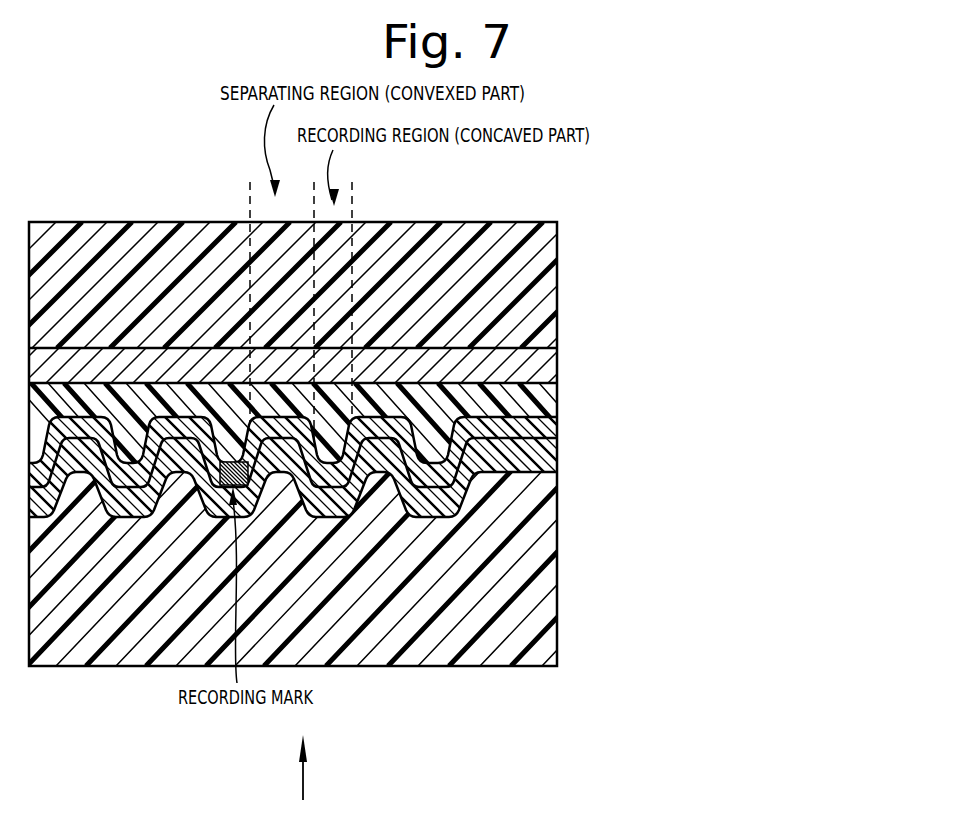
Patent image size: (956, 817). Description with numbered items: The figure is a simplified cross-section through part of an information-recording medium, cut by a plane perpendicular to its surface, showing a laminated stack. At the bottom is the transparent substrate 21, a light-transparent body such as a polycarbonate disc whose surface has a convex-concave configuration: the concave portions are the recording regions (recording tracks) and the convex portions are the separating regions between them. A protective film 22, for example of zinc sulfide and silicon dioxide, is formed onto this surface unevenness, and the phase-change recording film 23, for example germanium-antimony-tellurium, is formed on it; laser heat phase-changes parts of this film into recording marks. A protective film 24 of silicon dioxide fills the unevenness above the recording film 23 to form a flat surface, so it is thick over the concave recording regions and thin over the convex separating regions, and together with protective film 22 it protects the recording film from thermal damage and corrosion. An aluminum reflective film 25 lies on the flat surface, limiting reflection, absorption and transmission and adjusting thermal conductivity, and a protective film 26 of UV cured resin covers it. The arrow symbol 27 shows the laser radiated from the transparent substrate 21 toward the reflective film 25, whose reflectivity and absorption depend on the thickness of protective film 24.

The transparent substrate 21 is at (557, 590).
The protective film 22 is at (557, 459).
The recording film 23 is at (557, 427).
The protective film 24 is at (557, 396).
The reflective film 25 is at (557, 365).
The protective film 26 is at (557, 277).
The arrow symbol 27 is at (305, 786).